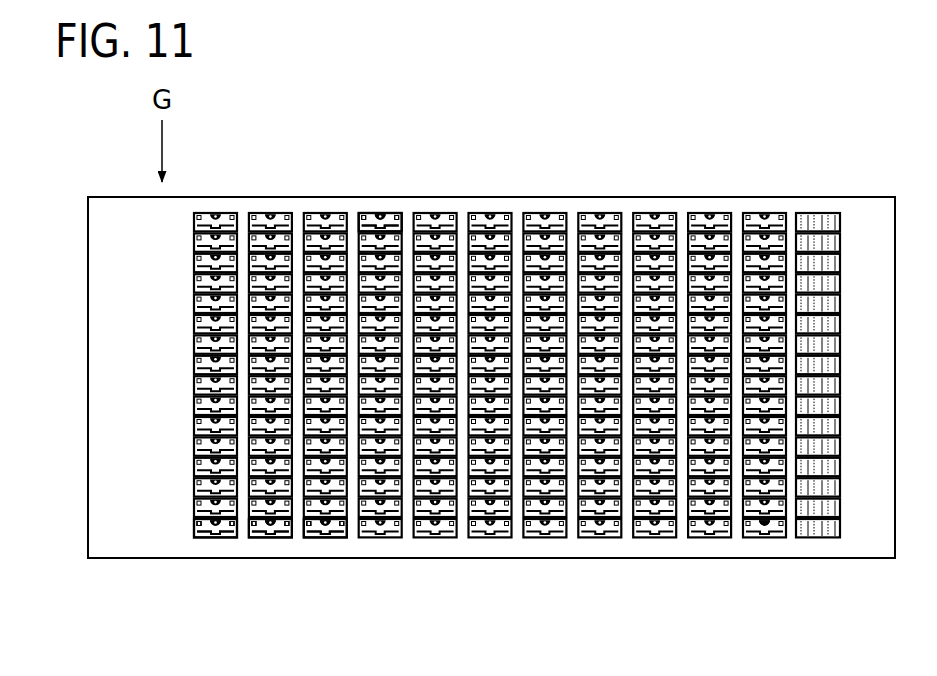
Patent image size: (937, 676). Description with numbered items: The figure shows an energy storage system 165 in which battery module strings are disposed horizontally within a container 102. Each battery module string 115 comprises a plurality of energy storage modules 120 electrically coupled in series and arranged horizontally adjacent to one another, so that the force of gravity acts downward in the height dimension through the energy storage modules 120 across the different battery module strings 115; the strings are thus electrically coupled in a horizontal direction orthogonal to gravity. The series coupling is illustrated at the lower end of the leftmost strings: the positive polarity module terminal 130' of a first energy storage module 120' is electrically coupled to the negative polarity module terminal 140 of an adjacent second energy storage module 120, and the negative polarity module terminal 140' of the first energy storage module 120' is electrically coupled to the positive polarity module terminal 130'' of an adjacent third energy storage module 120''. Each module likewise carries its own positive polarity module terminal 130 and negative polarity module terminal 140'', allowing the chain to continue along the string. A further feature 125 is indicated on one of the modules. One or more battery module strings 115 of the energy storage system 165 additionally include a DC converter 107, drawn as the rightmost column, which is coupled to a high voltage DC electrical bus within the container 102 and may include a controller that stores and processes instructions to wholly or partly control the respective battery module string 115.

The energy storage system 165 is at (732, 115).
The container 102 is at (805, 188).
The battery module string 115 is at (170, 387).
The energy storage module 120 is at (281, 386).
The positive polarity module terminal 130 is at (161, 558).
The negative polarity module terminal 140 is at (225, 566).
The first energy storage module 120' is at (277, 593).
The positive polarity module terminal 130' is at (266, 581).
The negative polarity module terminal 140' is at (320, 583).
The third energy storage module 120'' is at (358, 567).
The positive polarity module terminal 130'' is at (330, 562).
The negative polarity module terminal 140'' is at (393, 556).
The contact 125 is at (766, 522).
The DC converter 107 is at (818, 537).